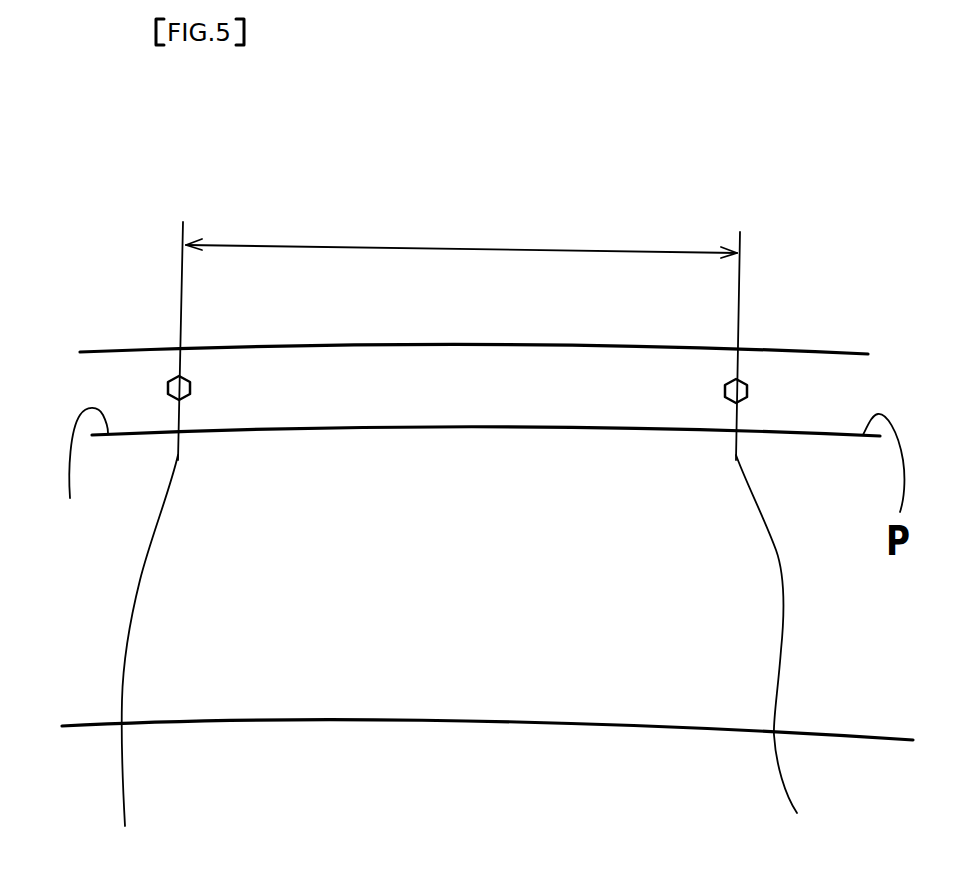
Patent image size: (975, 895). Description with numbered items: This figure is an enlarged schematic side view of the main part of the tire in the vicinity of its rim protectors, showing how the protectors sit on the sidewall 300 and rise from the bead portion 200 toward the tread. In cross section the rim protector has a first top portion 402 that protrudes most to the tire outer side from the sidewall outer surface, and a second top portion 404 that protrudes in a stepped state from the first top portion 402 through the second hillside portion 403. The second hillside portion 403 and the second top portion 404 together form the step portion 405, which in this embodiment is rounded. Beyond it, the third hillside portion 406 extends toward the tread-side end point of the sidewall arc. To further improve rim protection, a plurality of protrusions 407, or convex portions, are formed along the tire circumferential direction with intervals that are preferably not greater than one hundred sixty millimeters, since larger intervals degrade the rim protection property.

The bead portion 200 is at (443, 670).
The sidewall 300 is at (653, 227).
The first top portion 402 is at (77, 477).
The second hillside portion 403 is at (127, 367).
The second top portion 404 is at (148, 347).
The step portion 405 is at (757, 365).
The third hillside portion 406 is at (827, 338).
The protrusions 407 is at (464, 661).